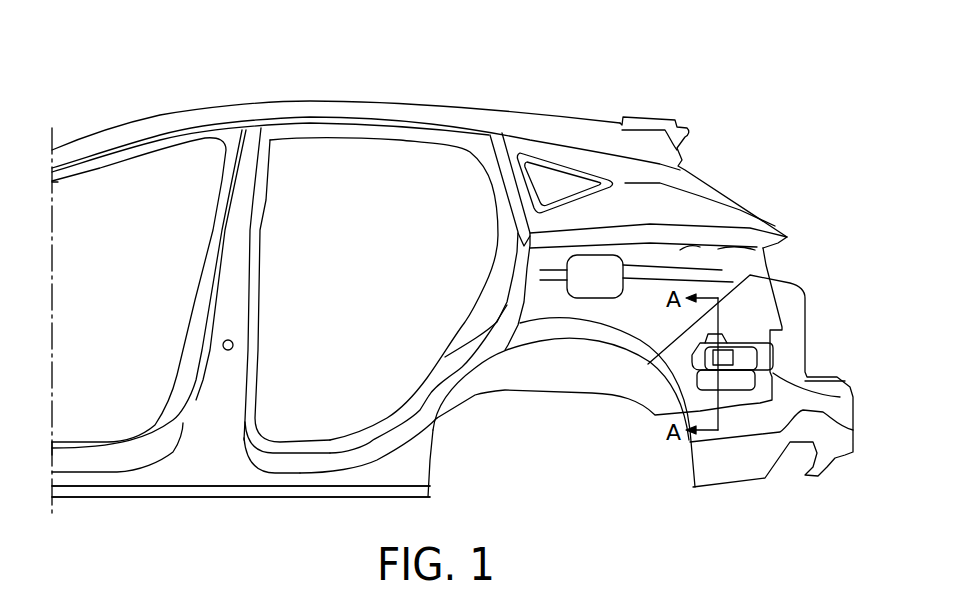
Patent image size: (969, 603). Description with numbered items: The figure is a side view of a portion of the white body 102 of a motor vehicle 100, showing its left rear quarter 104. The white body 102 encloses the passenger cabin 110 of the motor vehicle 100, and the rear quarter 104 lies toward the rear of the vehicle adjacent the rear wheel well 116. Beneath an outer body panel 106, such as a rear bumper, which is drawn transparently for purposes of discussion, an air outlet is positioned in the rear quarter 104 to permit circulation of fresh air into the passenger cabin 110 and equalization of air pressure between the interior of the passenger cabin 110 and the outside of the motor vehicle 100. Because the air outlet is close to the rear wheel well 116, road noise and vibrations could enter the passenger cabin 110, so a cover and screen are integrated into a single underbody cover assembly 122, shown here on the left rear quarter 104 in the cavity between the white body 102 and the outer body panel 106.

The motor vehicle 100 is at (121, 85).
The passenger cabin 110 is at (377, 238).
The white body 102 is at (659, 206).
The rear quarter 104 is at (592, 406).
The rear wheel well 116 is at (517, 457).
The outer body panel 106 is at (806, 375).
The underbody cover assembly 122 is at (768, 330).